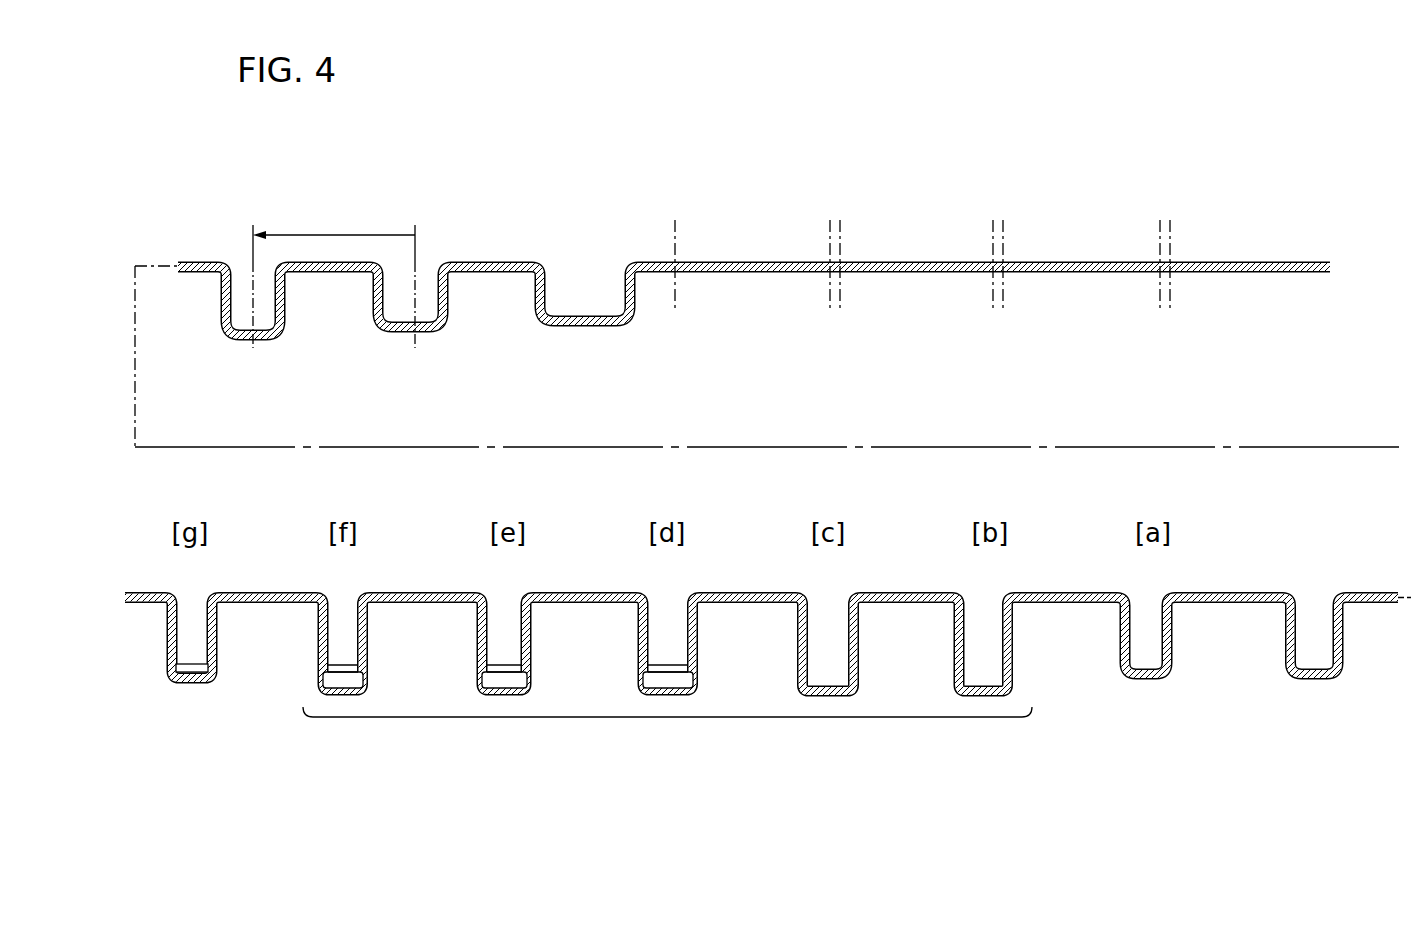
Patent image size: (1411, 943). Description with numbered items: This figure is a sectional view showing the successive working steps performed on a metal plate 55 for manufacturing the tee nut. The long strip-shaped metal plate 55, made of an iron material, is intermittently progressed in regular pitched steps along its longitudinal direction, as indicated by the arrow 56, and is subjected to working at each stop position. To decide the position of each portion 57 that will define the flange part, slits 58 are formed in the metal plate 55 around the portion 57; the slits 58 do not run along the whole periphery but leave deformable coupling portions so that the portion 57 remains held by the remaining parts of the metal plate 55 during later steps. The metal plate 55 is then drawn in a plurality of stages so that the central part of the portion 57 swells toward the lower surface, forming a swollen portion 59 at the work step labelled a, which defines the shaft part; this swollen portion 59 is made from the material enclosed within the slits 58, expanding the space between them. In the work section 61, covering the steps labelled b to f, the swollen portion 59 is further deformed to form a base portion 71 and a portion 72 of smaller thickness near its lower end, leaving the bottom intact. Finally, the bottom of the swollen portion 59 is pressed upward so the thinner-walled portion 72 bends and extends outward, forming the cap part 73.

The metal plate 55 is at (1242, 262).
The arrow 56 is at (337, 235).
The portion 57 is at (908, 262).
The slits 58 is at (839, 252).
The swollen portion 59 is at (1173, 653).
The work section 61 is at (638, 717).
The base portion 71 is at (216, 643).
The thinner-walled portion 72 is at (367, 680).
The cap part 73 is at (197, 683).